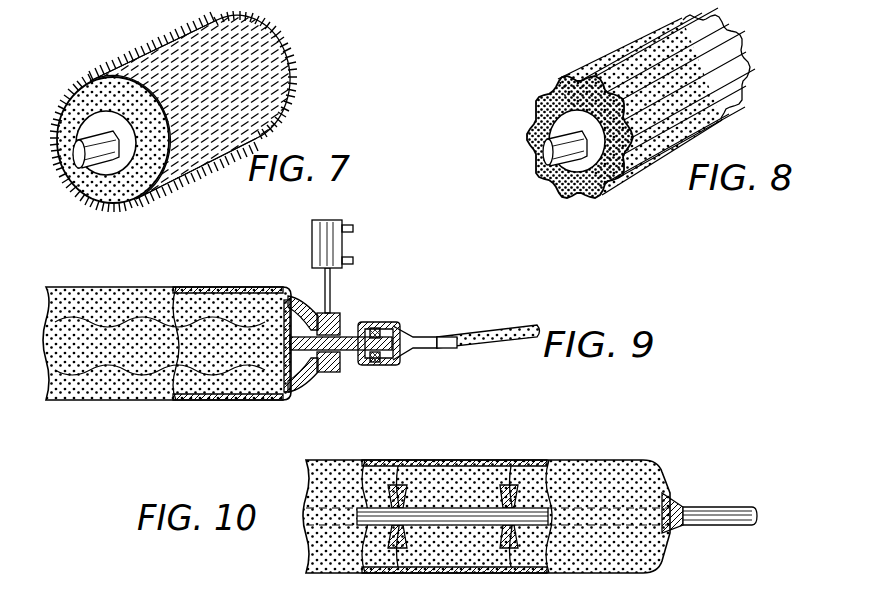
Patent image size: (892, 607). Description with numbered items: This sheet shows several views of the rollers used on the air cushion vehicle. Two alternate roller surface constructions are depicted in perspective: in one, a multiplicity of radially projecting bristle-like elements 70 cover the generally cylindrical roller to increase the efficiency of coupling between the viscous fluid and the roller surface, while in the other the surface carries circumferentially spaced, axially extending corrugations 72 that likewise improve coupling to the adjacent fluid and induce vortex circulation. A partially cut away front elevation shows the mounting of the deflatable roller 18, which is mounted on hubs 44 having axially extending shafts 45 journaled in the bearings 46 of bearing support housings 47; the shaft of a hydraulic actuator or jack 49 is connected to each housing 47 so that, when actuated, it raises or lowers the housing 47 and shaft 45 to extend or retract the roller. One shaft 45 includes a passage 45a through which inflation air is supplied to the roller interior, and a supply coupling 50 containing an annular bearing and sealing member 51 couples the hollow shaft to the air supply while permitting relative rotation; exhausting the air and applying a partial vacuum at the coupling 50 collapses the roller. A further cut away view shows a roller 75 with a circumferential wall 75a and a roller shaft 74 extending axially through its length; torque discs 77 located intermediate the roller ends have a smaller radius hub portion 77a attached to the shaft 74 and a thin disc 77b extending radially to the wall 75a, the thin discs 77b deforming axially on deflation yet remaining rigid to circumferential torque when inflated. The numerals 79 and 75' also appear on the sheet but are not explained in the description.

In FIG. 7, the bristle-like elements 70 is at (267, 72).
In FIG. 8, the corrugations 72 is at (737, 77).
In FIG. 9, the deflatable roller 18 is at (177, 402).
In FIG. 9, the hubs 44 is at (287, 368).
In FIG. 9, the shafts 45 is at (350, 350).
In FIG. 9, the passage 45a is at (403, 352).
In FIG. 9, the bearings 46 is at (315, 313).
In FIG. 9, the bearing support housings 47 is at (331, 373).
In FIG. 9, the hydraulic actuator or jack 49 is at (313, 235).
In FIG. 9, the supply coupling 50 is at (397, 322).
In FIG. 9, the annular bearing and sealing member 51 is at (376, 328).
In FIG. 10, the roller shaft 74 is at (717, 515).
In FIG. 10, the roller 75 is at (486, 495).
In FIG. 10, the circumferential wall 75a is at (487, 460).
In FIG. 10, the torque discs 77 is at (503, 488).
In FIG. 10, the hub portion 77a is at (500, 535).
In FIG. 10, the thin disc 77b is at (393, 553).
In FIG. 10, the roller element 79 is at (312, 600).
In FIG. 10, the roller 75' is at (225, 600).